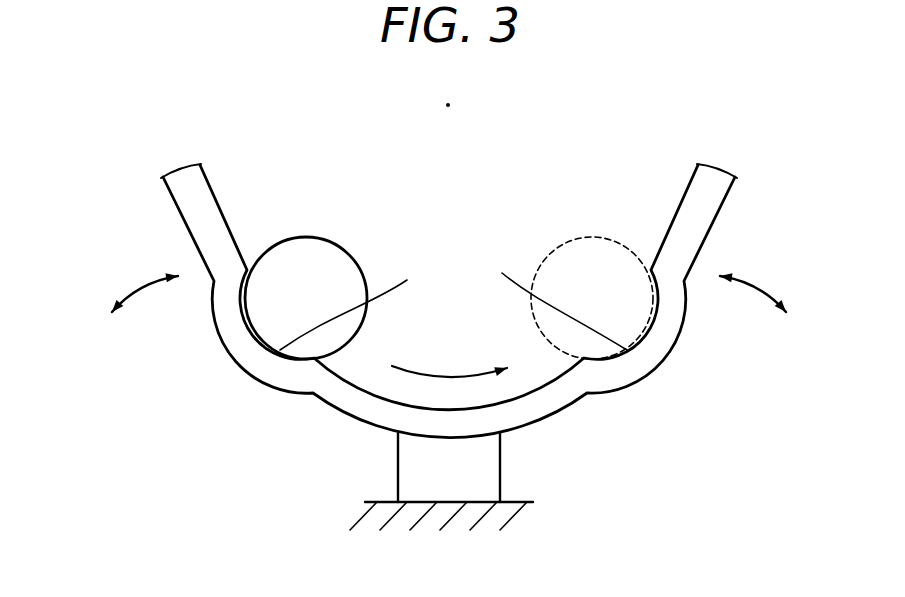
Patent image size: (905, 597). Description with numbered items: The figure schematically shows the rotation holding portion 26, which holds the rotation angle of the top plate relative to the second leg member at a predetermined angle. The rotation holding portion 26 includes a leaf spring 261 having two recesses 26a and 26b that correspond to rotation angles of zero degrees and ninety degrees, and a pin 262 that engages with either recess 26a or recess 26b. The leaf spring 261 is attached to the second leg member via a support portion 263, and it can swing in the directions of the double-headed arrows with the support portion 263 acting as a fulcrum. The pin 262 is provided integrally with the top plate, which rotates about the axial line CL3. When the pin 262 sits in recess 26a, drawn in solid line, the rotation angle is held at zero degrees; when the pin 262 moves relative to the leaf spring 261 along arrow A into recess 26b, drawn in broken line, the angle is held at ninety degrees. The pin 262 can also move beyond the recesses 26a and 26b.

The rotation holding portion 26 is at (308, 163).
The leaf spring 261 is at (197, 202).
The pin 262 is at (330, 238).
The support portion 263 is at (397, 463).
The recess 26a is at (351, 304).
The recess 26b is at (555, 301).
The axial line CL3 is at (448, 105).